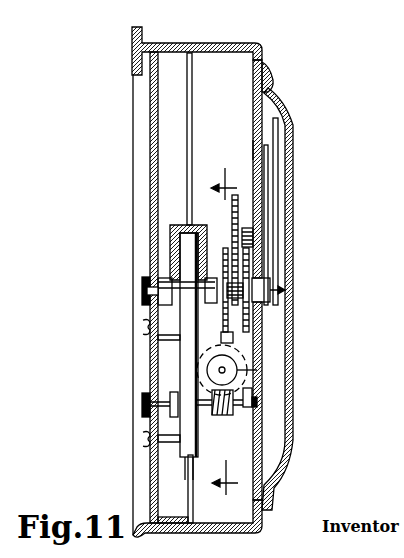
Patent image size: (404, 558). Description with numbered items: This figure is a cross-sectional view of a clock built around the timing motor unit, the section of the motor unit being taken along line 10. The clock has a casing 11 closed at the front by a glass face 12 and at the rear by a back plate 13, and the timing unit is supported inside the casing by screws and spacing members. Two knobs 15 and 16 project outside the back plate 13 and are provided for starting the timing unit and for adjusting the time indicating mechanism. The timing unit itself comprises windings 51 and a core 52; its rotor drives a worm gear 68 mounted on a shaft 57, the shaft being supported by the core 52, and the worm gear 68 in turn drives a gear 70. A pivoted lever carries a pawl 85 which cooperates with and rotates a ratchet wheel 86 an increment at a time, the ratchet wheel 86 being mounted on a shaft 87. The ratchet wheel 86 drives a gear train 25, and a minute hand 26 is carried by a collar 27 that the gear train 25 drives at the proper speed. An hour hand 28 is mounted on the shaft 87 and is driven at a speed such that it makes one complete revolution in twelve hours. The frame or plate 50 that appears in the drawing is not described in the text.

The section line 10 is at (218, 339).
The casing 11 is at (205, 43).
The glass face 12 is at (295, 152).
The back plate 13 is at (150, 185).
The knob 15 is at (143, 410).
The knob 16 is at (143, 285).
The gear train 25 is at (247, 188).
The minute hand 26 is at (252, 140).
The collar 27 is at (258, 305).
The hour hand 28 is at (283, 118).
The plate 50 is at (168, 366).
The windings 51 is at (172, 225).
The core 52 is at (187, 308).
The shaft 57 is at (241, 408).
The worm gear 68 is at (213, 415).
The gear 70 is at (247, 368).
The pawl 85 is at (240, 343).
The ratchet wheel 86 is at (223, 310).
The shaft 87 is at (215, 232).